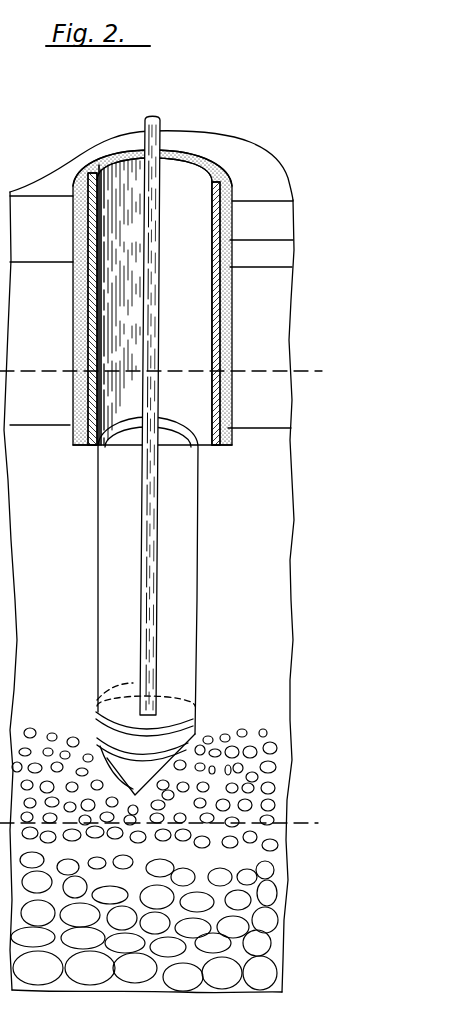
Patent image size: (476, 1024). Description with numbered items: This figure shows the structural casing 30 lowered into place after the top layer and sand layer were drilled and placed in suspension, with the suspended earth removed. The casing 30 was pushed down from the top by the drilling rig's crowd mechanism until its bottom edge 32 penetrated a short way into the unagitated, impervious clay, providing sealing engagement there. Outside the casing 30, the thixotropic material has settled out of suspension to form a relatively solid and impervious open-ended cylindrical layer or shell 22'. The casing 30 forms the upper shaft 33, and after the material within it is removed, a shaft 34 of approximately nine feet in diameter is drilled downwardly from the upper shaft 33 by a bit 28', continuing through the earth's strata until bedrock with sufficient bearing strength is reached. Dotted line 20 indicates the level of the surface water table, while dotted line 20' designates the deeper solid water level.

The structural casing 30 is at (212, 163).
The cylindrical layer or shell 22' is at (174, 562).
The upper shaft 33 is at (226, 299).
The surface water table level 20 is at (173, 358).
The bottom edge of the casing 32 is at (210, 449).
The shaft 34 is at (196, 596).
The bit 28' is at (215, 739).
The solid water level 20' is at (178, 816).